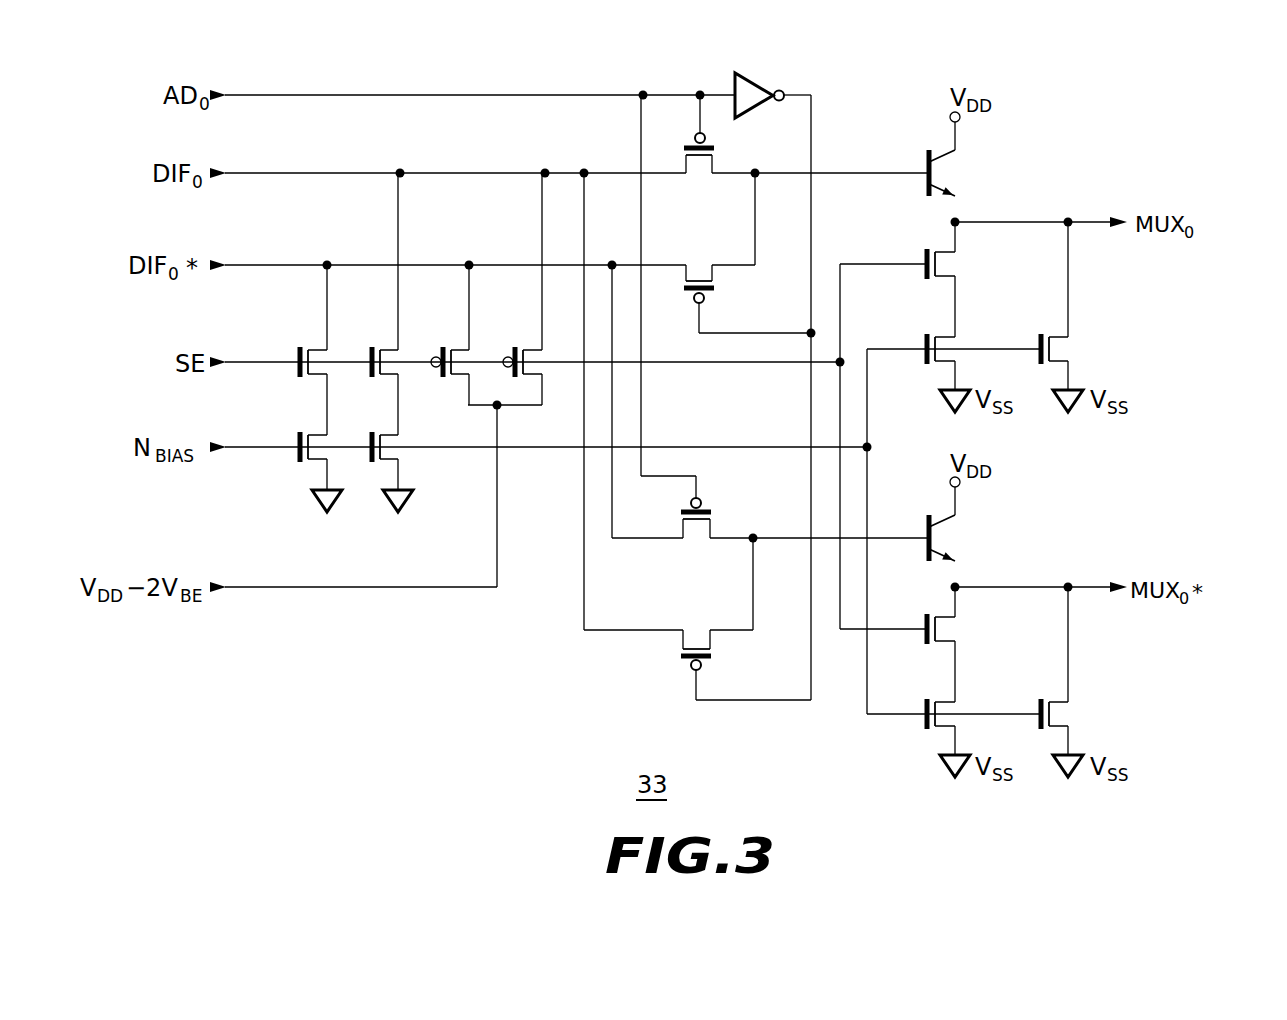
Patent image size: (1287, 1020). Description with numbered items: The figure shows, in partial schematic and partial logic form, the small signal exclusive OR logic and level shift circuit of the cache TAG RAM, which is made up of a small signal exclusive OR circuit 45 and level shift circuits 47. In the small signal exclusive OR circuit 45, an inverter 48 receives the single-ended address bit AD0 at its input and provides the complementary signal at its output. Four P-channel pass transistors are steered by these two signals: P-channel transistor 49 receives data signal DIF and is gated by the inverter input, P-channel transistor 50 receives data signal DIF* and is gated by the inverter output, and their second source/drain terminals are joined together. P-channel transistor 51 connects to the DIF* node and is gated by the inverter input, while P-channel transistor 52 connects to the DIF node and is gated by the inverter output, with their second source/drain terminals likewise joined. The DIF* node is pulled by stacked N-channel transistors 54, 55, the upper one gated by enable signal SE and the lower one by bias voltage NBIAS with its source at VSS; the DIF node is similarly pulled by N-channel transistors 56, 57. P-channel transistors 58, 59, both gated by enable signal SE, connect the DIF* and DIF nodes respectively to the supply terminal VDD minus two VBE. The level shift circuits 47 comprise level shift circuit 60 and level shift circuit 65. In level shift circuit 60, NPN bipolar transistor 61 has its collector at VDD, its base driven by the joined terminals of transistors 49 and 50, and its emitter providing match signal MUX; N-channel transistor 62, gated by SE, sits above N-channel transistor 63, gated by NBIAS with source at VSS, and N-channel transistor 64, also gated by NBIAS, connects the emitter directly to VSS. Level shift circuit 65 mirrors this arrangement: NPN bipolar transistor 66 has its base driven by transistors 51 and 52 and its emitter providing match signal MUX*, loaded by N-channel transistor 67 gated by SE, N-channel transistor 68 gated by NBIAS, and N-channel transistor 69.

The small signal exclusive OR circuit 45 is at (681, 66).
The level shift circuits 47 is at (1045, 110).
The inverter 48 is at (766, 106).
The P-channel transistor 49 is at (694, 135).
The P-channel transistor 50 is at (708, 301).
The P-channel transistor 51 is at (704, 507).
The P-channel transistor 52 is at (687, 663).
The N-channel transistor 54 is at (300, 348).
The N-channel transistor 55 is at (300, 433).
The N-channel transistor 56 is at (373, 348).
The N-channel transistor 57 is at (373, 433).
The P-channel transistor 58 is at (443, 348).
The P-channel transistor 59 is at (515, 348).
The level shift circuit 60 is at (1195, 332).
The NPN bipolar transistor 61 is at (928, 157).
The N-channel transistor 62 is at (926, 250).
The N-channel transistor 63 is at (926, 336).
The N-channel transistor 64 is at (1040, 336).
The level shift circuit 65 is at (1195, 697).
The NPN bipolar transistor 66 is at (927, 517).
The N-channel transistor 67 is at (926, 615).
The N-channel transistor 68 is at (923, 700).
The N-channel transistor 69 is at (1038, 700).